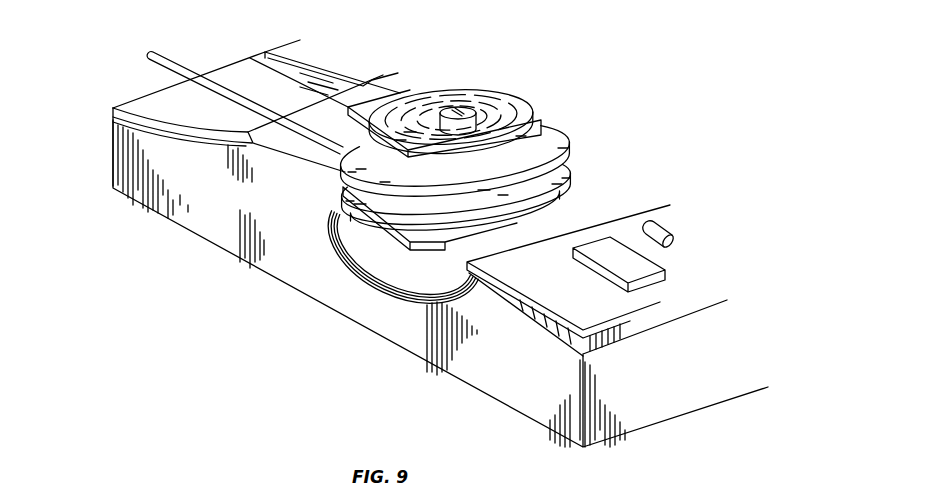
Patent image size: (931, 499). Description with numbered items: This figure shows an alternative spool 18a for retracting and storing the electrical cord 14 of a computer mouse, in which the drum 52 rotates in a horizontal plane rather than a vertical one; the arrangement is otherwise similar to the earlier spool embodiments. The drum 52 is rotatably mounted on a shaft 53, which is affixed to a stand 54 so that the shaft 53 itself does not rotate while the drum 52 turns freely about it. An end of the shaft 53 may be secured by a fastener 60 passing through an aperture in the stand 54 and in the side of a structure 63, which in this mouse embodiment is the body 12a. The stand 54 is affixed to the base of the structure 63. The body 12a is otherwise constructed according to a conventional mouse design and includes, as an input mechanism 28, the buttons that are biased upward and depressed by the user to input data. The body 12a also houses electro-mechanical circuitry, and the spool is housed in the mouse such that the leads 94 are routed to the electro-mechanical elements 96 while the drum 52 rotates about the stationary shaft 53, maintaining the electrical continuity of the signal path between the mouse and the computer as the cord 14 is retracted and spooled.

The body 12a is at (486, 408).
The electrical cord 14 is at (467, 262).
The spool 18a is at (498, 124).
The input mechanism 28 is at (167, 98).
The drum 52 is at (517, 230).
The shaft 53 is at (470, 117).
The stand 54 is at (372, 258).
The fastener 60 is at (452, 117).
The structure 63 is at (220, 222).
The lead 94 is at (393, 235).
The electro-mechanical elements 96 is at (670, 257).